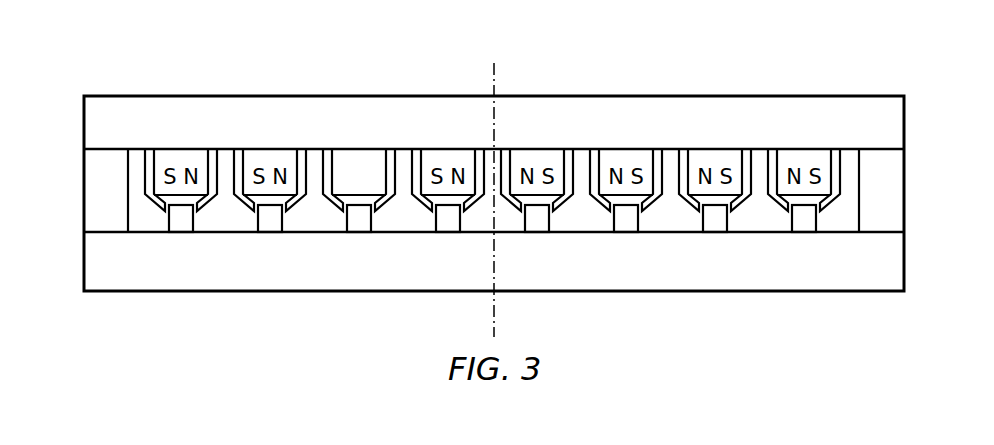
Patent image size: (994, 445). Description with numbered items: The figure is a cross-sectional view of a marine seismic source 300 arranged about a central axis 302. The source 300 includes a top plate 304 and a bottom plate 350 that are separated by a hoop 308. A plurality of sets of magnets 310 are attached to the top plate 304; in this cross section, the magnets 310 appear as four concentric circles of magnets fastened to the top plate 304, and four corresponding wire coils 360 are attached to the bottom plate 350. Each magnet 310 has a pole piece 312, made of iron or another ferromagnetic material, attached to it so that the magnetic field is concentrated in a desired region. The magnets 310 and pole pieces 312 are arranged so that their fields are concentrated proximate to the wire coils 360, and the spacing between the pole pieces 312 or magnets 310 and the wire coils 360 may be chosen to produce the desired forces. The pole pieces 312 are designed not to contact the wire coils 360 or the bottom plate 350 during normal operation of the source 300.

The marine seismic source 300 is at (785, 55).
The axis 302 is at (494, 63).
The top plate 304 is at (538, 107).
The hoop 308 is at (110, 192).
The magnets 310 is at (362, 154).
The pole pieces 312 is at (658, 153).
The bottom plate 350 is at (273, 277).
The wire coils 360 is at (542, 222).